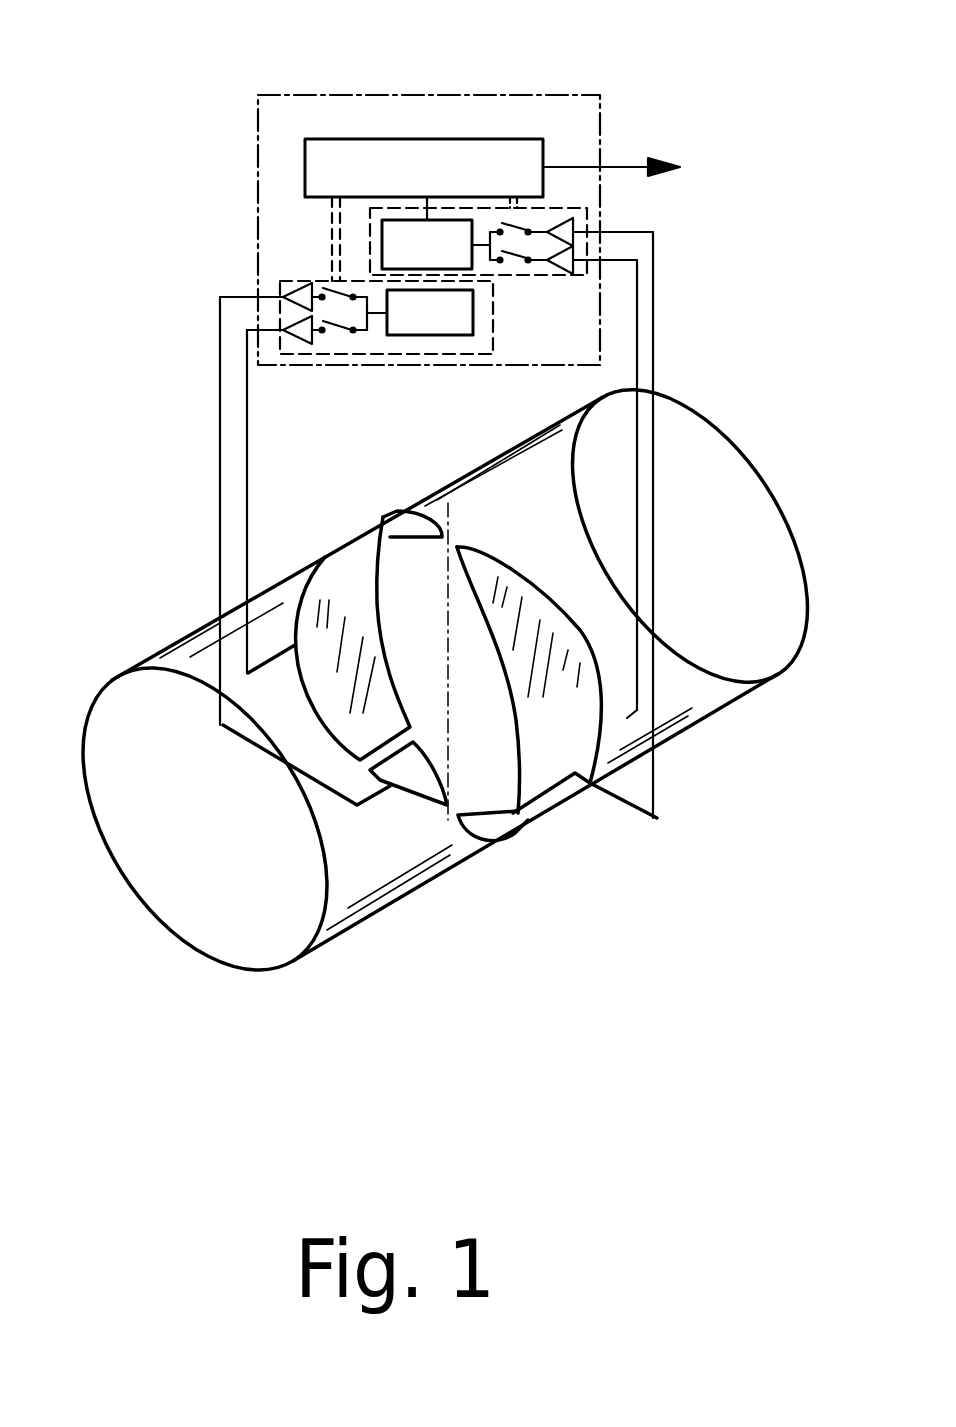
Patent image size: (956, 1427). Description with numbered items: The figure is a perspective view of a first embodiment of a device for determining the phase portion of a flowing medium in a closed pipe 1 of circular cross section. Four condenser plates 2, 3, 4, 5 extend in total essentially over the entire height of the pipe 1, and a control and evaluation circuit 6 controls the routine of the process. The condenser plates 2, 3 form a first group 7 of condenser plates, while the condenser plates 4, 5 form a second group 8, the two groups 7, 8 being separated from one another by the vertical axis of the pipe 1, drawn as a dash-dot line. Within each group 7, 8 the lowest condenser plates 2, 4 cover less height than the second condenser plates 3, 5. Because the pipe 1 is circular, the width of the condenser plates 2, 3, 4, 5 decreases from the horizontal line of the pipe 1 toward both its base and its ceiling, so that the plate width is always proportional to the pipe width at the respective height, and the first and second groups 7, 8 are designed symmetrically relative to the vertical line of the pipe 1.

The pipe 1 is at (195, 633).
The condenser plate 2 is at (398, 777).
The condenser plate 3 is at (312, 570).
The condenser plate 4 is at (488, 827).
The condenser plate 5 is at (583, 723).
The control and evaluation circuit 6 is at (582, 120).
The first group of condenser plates 7 is at (345, 496).
The second group of condenser plates 8 is at (577, 830).